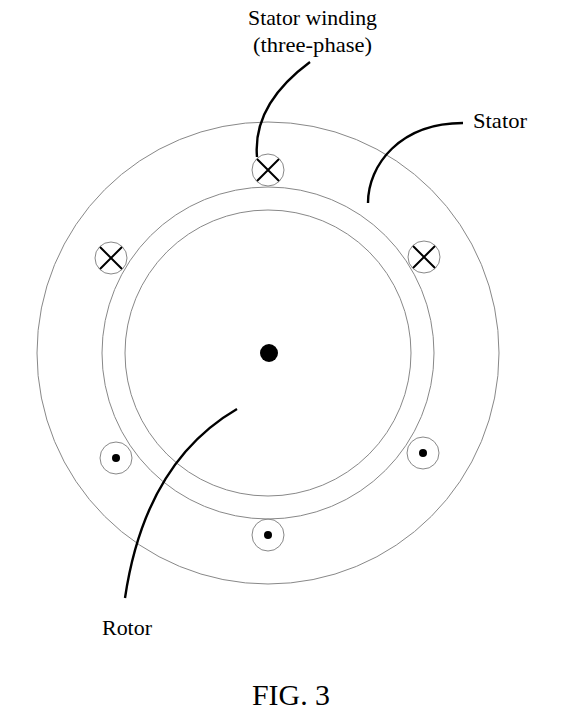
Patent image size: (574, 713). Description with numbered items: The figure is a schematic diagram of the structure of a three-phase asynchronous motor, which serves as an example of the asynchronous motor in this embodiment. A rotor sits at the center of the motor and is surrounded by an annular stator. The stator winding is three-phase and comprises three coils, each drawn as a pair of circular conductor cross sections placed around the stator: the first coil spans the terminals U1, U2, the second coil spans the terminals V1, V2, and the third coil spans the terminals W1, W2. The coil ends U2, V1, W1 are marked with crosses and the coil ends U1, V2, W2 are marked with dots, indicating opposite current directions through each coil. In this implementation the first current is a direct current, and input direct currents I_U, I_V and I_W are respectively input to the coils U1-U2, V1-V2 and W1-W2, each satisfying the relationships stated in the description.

The coil terminal U1 is at (279, 546).
The coil terminal U2 is at (284, 161).
The coil terminal V1 is at (116, 243).
The coil terminal V2 is at (437, 447).
The coil terminal W1 is at (440, 266).
The coil terminal W2 is at (102, 447).